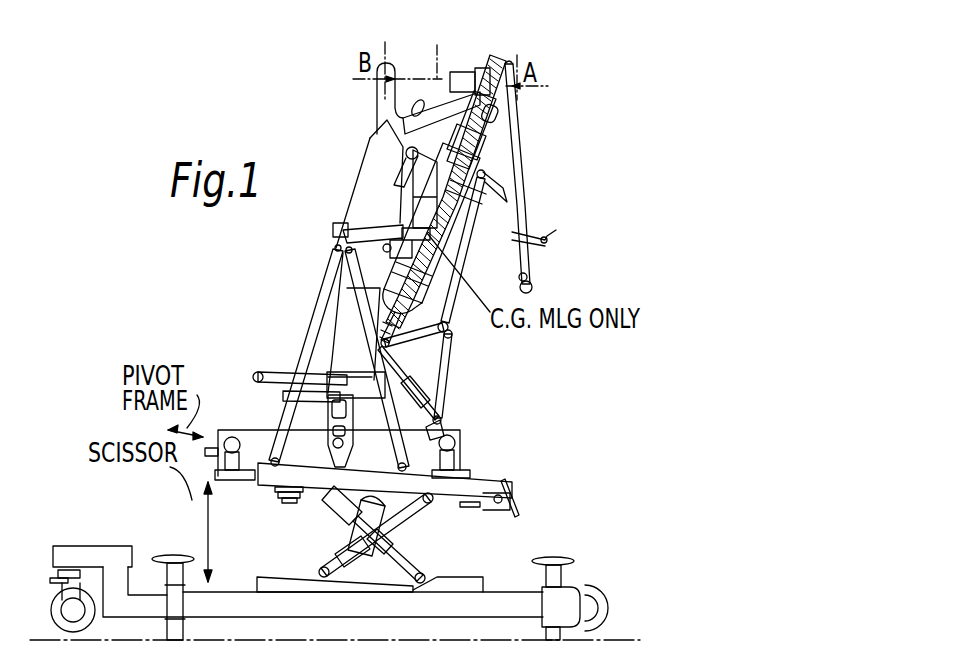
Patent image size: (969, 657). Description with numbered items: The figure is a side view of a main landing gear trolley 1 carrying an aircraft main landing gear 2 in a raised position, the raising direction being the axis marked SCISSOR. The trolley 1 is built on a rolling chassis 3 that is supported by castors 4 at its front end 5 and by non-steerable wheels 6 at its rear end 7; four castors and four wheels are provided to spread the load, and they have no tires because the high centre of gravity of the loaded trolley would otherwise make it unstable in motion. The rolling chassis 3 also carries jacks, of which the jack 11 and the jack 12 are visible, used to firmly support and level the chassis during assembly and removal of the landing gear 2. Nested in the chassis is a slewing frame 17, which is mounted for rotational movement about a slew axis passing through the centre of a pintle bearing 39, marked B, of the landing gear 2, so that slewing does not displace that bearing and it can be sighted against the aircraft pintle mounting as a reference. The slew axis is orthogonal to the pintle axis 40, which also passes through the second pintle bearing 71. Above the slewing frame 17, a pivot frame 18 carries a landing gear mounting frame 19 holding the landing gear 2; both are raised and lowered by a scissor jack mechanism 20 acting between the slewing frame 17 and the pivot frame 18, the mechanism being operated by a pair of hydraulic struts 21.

The main landing gear trolley 1 is at (524, 483).
The main landing gear 2 is at (540, 210).
The rolling chassis 3 is at (88, 546).
The castor 4 is at (53, 605).
The front end 5 is at (53, 558).
The non-steerable wheel 6 is at (606, 607).
The rear end 7 is at (578, 589).
The jack 11 is at (165, 550).
The jack 12 is at (568, 556).
The slewing frame 17 is at (283, 578).
The pivot frame 18 is at (270, 500).
The landing gear mounting frame 19 is at (490, 470).
The scissor jack mechanism 20 is at (352, 547).
The hydraulic strut 21 is at (412, 548).
The pintle bearing 39 is at (376, 87).
The pintle axis 40 is at (437, 46).
The pintle bearing 71 is at (491, 56).